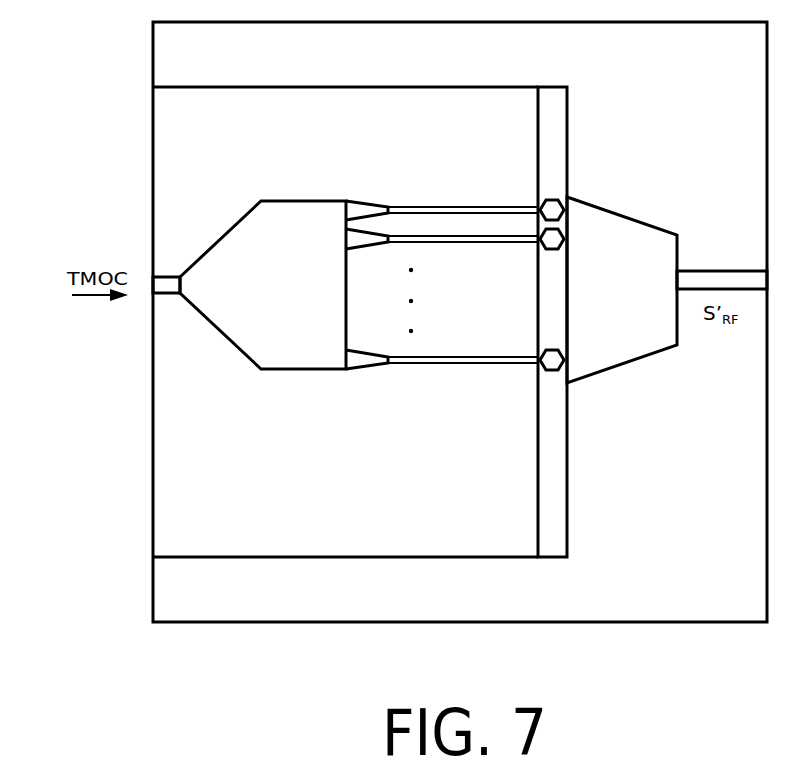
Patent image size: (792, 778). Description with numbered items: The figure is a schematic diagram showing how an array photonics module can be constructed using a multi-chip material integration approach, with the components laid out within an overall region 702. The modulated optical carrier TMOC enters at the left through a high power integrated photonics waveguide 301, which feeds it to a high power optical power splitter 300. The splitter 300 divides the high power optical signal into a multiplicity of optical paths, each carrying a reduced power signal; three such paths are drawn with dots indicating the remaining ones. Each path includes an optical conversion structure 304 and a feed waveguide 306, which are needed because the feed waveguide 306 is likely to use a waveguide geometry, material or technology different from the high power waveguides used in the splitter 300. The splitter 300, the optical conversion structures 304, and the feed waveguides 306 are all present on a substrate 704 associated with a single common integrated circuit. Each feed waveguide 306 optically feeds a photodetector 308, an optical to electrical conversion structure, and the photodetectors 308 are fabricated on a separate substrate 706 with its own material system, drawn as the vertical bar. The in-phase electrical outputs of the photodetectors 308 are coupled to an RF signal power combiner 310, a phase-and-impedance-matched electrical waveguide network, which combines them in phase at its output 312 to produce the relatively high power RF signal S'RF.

The substrate / chip 702 is at (460, 322).
The substrate 704 is at (345, 322).
The separate substrate 706 is at (548, 538).
The high power integrated photonics waveguide 301 is at (170, 271).
The high power optical power splitter 300 is at (263, 285).
The optical conversion structure 304 is at (376, 203).
The feed waveguide 306 is at (517, 203).
The photodetector 308 is at (563, 199).
The RF signal power combiner 310 is at (622, 290).
The output 312 is at (706, 268).